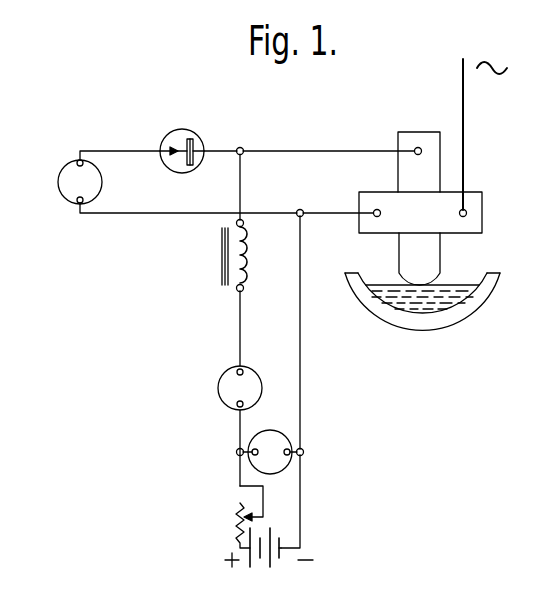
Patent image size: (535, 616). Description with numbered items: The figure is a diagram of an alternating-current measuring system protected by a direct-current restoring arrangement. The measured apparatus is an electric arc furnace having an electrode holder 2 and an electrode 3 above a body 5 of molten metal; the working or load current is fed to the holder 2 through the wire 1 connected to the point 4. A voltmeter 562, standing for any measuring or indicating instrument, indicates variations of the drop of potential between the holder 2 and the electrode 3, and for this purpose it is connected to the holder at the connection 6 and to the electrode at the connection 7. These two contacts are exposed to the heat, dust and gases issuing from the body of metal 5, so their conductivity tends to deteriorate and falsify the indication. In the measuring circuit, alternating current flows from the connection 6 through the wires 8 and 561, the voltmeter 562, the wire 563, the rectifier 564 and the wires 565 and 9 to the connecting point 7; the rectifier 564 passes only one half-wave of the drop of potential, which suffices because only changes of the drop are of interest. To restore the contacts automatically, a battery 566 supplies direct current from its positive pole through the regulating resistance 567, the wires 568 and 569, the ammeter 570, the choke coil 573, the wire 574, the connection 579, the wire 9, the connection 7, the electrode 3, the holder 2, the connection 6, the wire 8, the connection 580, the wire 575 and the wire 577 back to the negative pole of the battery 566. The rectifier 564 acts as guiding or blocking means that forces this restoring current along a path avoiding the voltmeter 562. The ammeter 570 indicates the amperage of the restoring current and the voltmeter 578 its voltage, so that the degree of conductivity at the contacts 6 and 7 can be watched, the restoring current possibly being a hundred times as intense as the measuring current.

The wire 1 is at (466, 141).
The electrode holder 2 is at (420, 212).
The electrode 3 is at (419, 259).
The point 4 is at (467, 214).
The body of molten metal 5 is at (451, 284).
The connection 6 is at (380, 210).
The connection 7 is at (418, 156).
The wire 8 is at (333, 212).
The wire 9 is at (325, 151).
The wire 561 is at (156, 212).
The voltmeter 562 is at (58, 183).
The wire 563 is at (130, 151).
The rectifier 564 is at (189, 129).
The wire 565 is at (229, 150).
The battery 566 is at (270, 568).
The regulating resistance 567 is at (236, 524).
The wire 568 is at (265, 499).
The wire 569 is at (237, 430).
The ammeter 570 is at (218, 387).
The choke coil 573 is at (219, 254).
The wire 574 is at (244, 193).
The wire 575 is at (302, 340).
The wire 577 is at (302, 496).
The voltmeter 578 is at (275, 431).
The connection 579 is at (243, 154).
The connection 580 is at (303, 216).